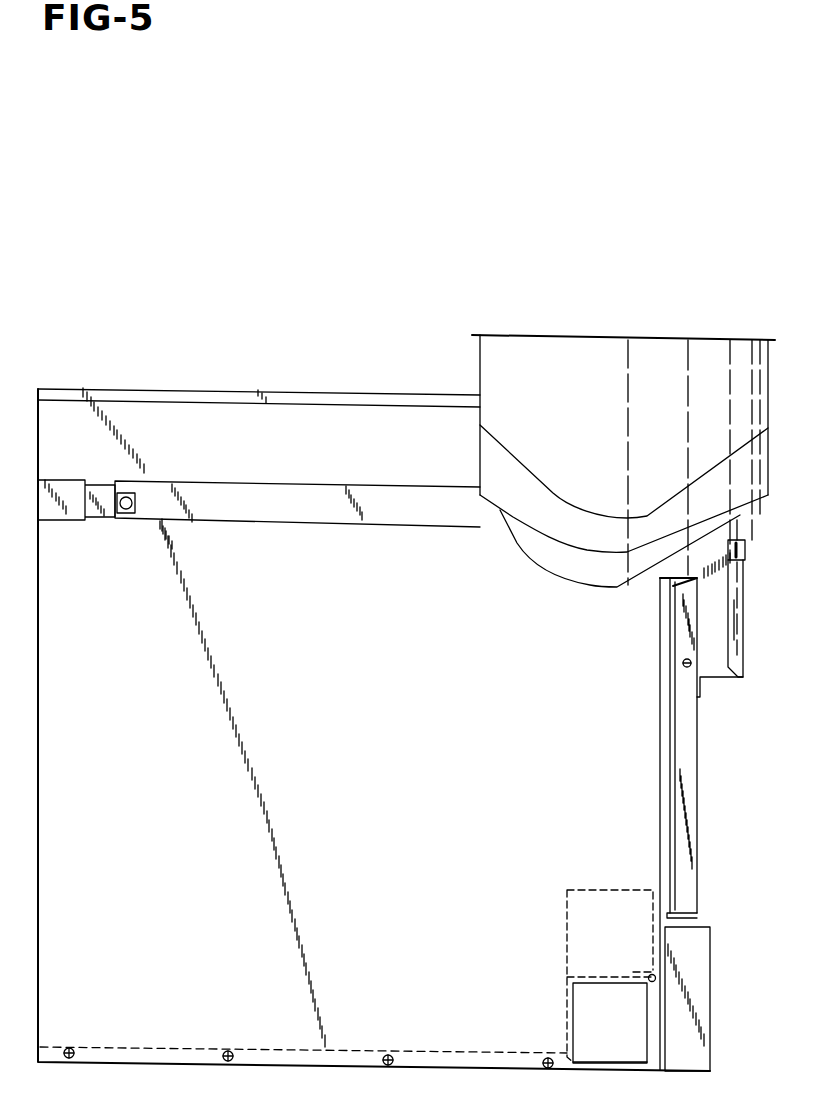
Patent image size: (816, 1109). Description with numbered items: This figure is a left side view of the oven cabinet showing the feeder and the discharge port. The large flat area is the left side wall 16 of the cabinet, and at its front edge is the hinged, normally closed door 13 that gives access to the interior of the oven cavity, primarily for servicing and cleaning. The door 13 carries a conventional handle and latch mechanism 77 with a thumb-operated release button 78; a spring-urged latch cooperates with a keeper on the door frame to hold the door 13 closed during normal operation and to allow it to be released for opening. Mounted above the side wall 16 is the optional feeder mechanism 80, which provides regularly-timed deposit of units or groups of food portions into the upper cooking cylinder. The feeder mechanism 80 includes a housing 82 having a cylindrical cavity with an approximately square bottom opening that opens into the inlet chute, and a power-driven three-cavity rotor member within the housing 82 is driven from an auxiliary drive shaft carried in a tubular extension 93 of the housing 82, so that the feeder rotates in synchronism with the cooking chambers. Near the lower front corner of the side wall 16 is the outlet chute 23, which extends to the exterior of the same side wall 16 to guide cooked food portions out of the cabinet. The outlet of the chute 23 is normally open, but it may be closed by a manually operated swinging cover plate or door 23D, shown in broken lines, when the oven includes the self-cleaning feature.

The feeder mechanism 80 is at (537, 303).
The housing 82 is at (588, 421).
The thumb-operated release button 78 is at (746, 548).
The handle and latch mechanism 77 is at (752, 642).
The tubular extension 93 is at (253, 510).
The door 13 is at (693, 752).
The side wall 16 is at (363, 793).
The cover plate or door 23D is at (567, 945).
The outlet chute 23 is at (603, 1024).